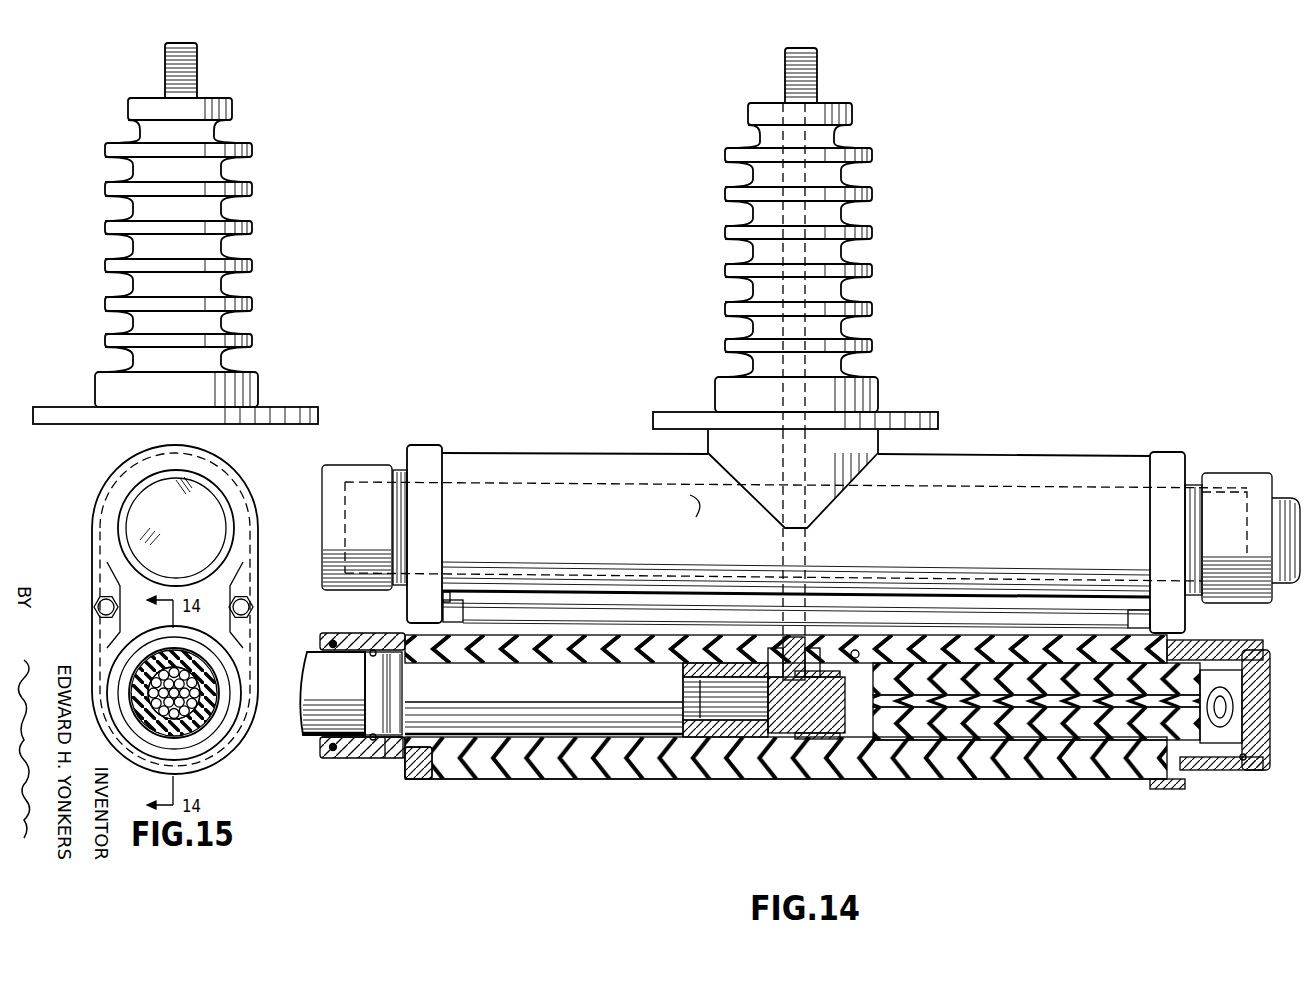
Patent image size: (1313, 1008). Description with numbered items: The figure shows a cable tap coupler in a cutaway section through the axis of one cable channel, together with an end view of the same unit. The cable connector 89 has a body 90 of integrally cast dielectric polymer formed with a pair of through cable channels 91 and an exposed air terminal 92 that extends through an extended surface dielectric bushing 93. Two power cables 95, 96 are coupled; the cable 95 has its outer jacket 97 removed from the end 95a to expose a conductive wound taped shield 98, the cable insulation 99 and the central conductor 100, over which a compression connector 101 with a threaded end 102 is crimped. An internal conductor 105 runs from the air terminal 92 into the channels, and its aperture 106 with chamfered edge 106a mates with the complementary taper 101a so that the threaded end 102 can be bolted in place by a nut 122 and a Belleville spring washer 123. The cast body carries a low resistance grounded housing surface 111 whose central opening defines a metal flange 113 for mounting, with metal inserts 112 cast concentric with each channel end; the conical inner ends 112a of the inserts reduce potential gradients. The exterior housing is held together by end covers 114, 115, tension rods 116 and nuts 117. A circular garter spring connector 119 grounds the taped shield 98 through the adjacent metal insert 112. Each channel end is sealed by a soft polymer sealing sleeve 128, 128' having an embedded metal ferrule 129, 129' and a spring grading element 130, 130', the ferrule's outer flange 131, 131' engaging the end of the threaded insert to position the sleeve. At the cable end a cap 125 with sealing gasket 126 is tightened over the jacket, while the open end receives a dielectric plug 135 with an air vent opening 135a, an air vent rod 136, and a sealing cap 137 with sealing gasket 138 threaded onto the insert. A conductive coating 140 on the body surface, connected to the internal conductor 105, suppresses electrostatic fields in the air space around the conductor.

In FIG. 15, the cable connector 89 is at (278, 234).
In FIG. 14, the cable connector 89 is at (950, 300).
In FIG. 14, the body 90 is at (950, 781).
In FIG. 14, the cable channels 91 is at (587, 470).
In FIG. 15, the air terminal 92 is at (198, 62).
In FIG. 14, the air terminal 92 is at (818, 73).
In FIG. 15, the extended surface dielectric bushing 93 is at (253, 150).
In FIG. 14, the extended surface dielectric bushing 93 is at (873, 197).
In FIG. 15, the electrical power cable 95 is at (132, 657).
In FIG. 14, the electrical power cable 95 is at (300, 745).
In FIG. 14, the cable end 95a is at (770, 737).
In FIG. 14, the electrical power cable 96 is at (1287, 497).
In FIG. 15, the outer jacket 97 is at (213, 670).
In FIG. 14, the outer jacket 97 is at (318, 742).
In FIG. 14, the conductive wound taped shield 98 is at (383, 760).
In FIG. 15, the cable insulation 99 is at (205, 687).
In FIG. 14, the cable insulation 99 is at (567, 722).
In FIG. 15, the central conductor 100 is at (200, 715).
In FIG. 14, the central conductor 100 is at (712, 722).
In FIG. 14, the compression connector 101 is at (745, 740).
In FIG. 14, the complementary taper 101a is at (778, 640).
In FIG. 14, the threaded end 102 is at (843, 704).
In FIG. 14, the internal conductor 105 is at (798, 737).
In FIG. 14, the aperture 106 is at (845, 732).
In FIG. 14, the chamfered edge 106a is at (803, 735).
In FIG. 15, the grounded housing surface 111 is at (248, 443).
In FIG. 14, the grounded housing surface 111 is at (1045, 453).
In FIG. 14, the metal inserts 112 is at (402, 468).
In FIG. 14, the conical inner end of metal insert 112a is at (440, 780).
In FIG. 15, the metal flange 113 is at (318, 410).
In FIG. 14, the metal flange 113 is at (938, 420).
In FIG. 15, the end cover 114 is at (233, 477).
In FIG. 14, the end cover 114 is at (438, 446).
In FIG. 14, the end cover 115 is at (1165, 451).
In FIG. 14, the tension rods 116 is at (541, 605).
In FIG. 15, the nuts 117 is at (104, 598).
In FIG. 14, the nuts 117 is at (458, 598).
In FIG. 14, the circular garter spring connector 119 is at (362, 640).
In FIG. 14, the nut 122 is at (842, 716).
In FIG. 14, the Belleville spring washer 123 is at (808, 650).
In FIG. 15, the cap 125 is at (118, 664).
In FIG. 14, the cap 125 is at (1245, 474).
In FIG. 14, the sealing gasket 126 is at (333, 760).
In FIG. 14, the soft polymer sealing sleeve 128 is at (786, 789).
In FIG. 14, the soft polymer sealing sleeve 128' is at (1020, 792).
In FIG. 14, the metal ferrule 129 is at (396, 752).
In FIG. 14, the metal ferrule 129' is at (1228, 774).
In FIG. 14, the spring grading element 130 is at (467, 761).
In FIG. 14, the spring grading element 130' is at (1221, 785).
In FIG. 14, the outer flange 131 is at (311, 685).
In FIG. 14, the outer flange 131' is at (1258, 799).
In FIG. 14, the dielectric plug 135 is at (1065, 702).
In FIG. 14, the air vent opening 135a is at (1085, 722).
In FIG. 14, the air vent rod 136 is at (1120, 702).
In FIG. 15, the sealing cap 137 is at (236, 518).
In FIG. 14, the sealing cap 137 is at (347, 464).
In FIG. 14, the sealing gasket 138 is at (1268, 762).
In FIG. 14, the conductive coating 140 is at (718, 640).